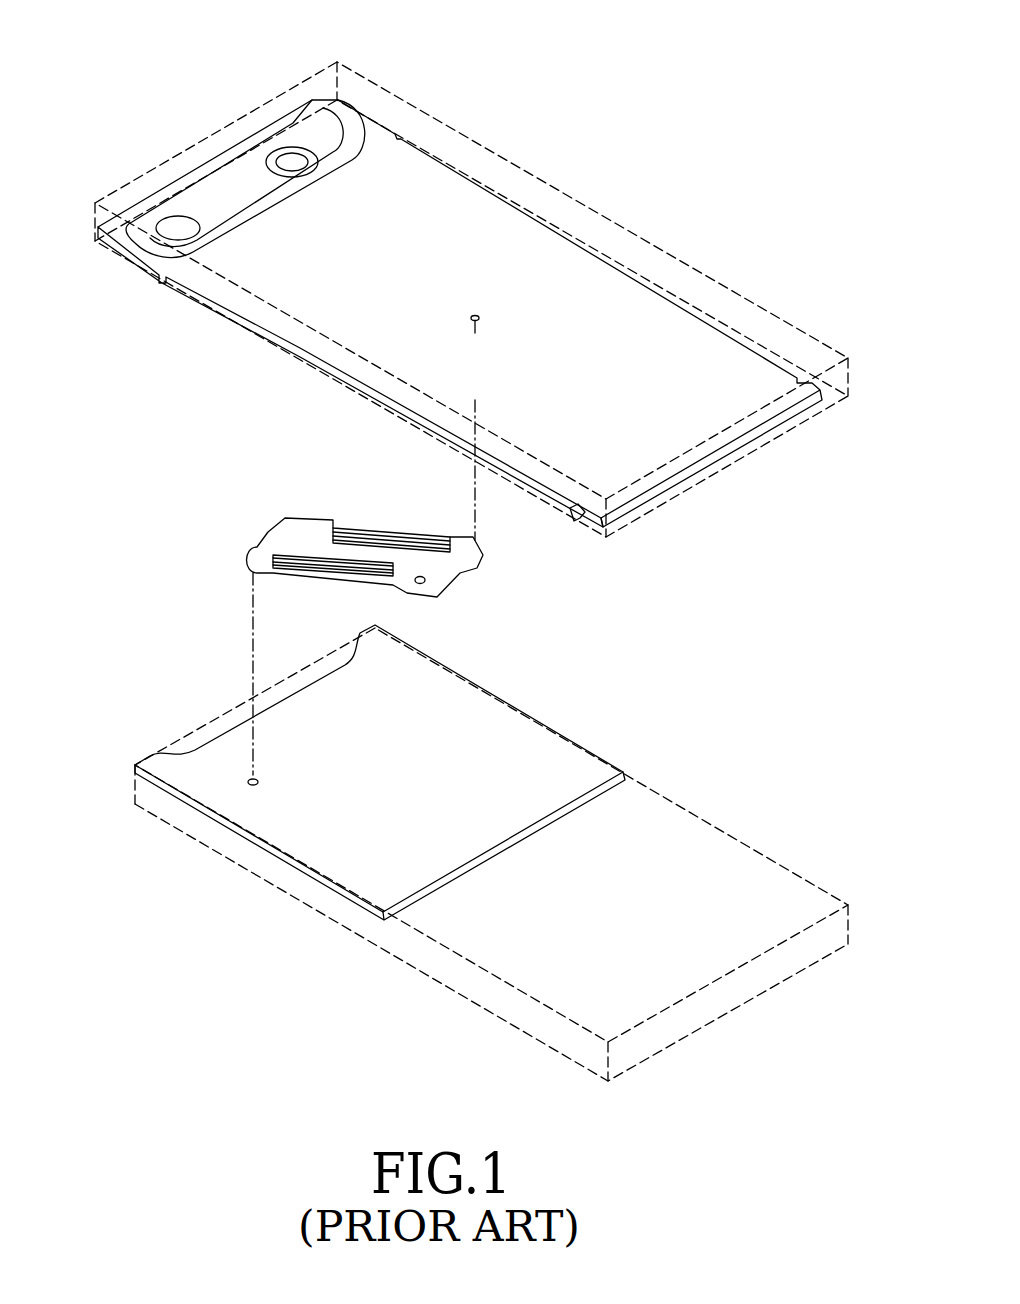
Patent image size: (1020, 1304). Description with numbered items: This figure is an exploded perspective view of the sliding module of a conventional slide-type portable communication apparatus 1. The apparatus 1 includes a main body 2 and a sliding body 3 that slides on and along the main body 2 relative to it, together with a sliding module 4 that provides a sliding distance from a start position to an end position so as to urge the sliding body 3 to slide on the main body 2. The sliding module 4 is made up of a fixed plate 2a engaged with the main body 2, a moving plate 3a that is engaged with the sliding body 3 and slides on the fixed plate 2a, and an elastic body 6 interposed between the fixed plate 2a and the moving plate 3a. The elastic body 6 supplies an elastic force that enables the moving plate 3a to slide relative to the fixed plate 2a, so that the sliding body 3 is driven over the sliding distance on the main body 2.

The slide-type portable communication apparatus 1 is at (653, 77).
The main body 2 is at (667, 813).
The fixed plate 2a is at (545, 740).
The sliding body 3 is at (650, 243).
The moving plate 3a is at (727, 455).
The sliding module 4 is at (86, 782).
The elastic body 6 is at (287, 520).